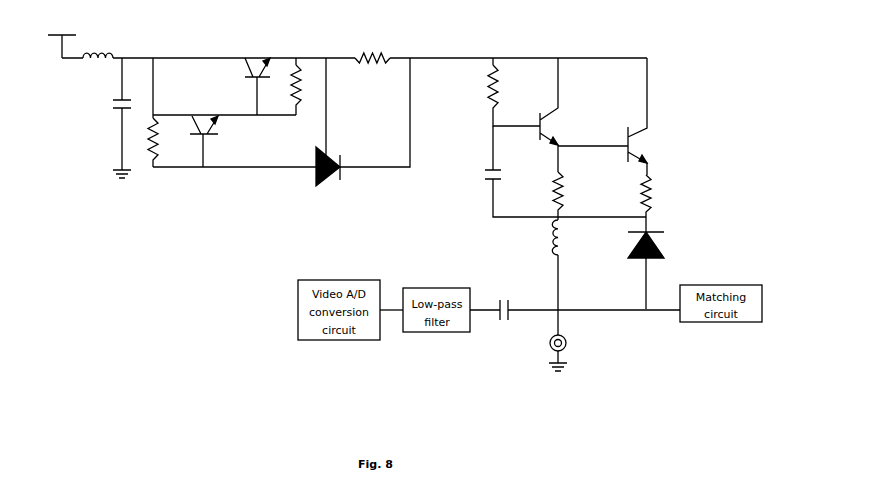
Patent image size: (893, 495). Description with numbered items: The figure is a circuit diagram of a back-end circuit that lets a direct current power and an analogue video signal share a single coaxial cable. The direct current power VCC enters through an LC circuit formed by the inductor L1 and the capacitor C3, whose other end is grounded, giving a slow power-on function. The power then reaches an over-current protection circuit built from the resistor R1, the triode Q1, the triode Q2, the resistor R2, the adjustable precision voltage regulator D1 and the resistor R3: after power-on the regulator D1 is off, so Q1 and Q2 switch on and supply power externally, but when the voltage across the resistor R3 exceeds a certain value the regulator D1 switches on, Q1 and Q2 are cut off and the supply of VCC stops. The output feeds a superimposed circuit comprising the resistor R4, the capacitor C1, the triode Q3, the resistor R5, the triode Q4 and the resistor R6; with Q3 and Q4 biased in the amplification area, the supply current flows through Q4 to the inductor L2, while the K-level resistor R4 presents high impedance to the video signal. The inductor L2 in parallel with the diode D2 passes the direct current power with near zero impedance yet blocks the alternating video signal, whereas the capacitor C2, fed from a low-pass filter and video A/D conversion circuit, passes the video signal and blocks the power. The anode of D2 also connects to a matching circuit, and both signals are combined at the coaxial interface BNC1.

The direct current power VCC is at (62, 39).
The inductor L1 is at (98, 49).
The capacitor C3 is at (109, 118).
The resistor R1 is at (144, 112).
The triode Q1 is at (200, 134).
The triode Q2 is at (256, 79).
The resistor R2 is at (304, 86).
The resistor R3 is at (372, 51).
The adjustable precision voltage regulator D1 is at (353, 122).
The resistor R4 is at (503, 92).
The triode Q3 is at (544, 115).
The capacitor C1 is at (553, 171).
The resistor R5 is at (567, 194).
The triode Q4 is at (608, 116).
The resistor R6 is at (655, 196).
The inductor L2 is at (565, 263).
The diode D2 is at (656, 263).
The capacitor C2 is at (575, 303).
The coaxial interface BNC1 is at (577, 340).